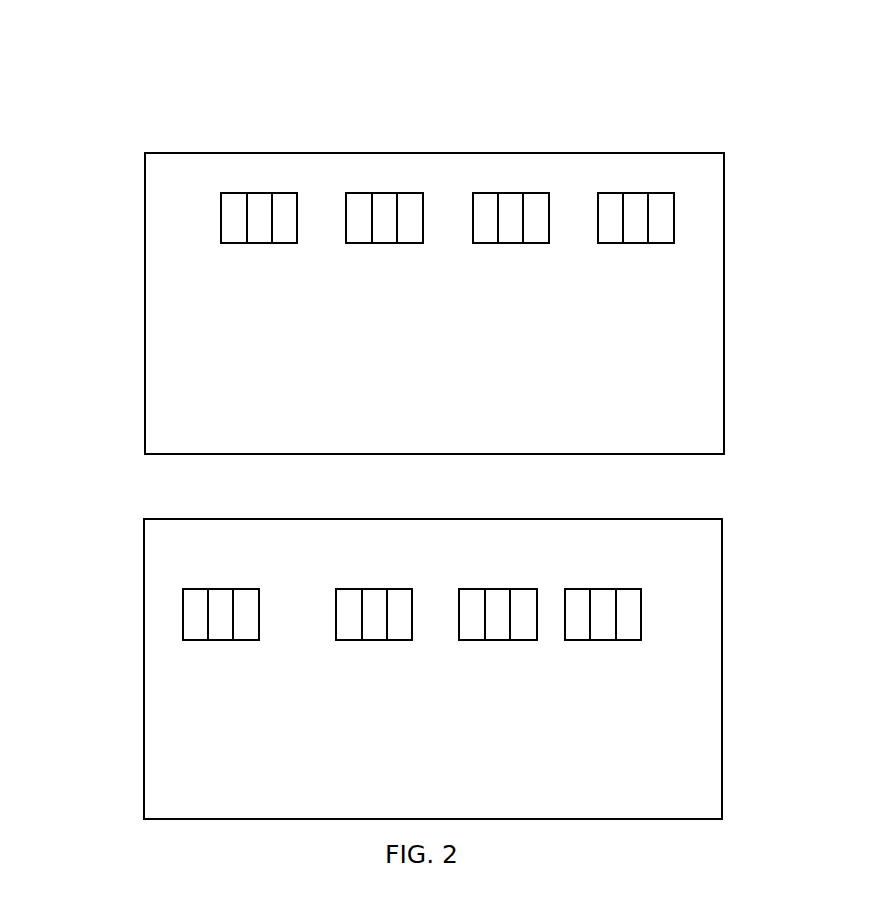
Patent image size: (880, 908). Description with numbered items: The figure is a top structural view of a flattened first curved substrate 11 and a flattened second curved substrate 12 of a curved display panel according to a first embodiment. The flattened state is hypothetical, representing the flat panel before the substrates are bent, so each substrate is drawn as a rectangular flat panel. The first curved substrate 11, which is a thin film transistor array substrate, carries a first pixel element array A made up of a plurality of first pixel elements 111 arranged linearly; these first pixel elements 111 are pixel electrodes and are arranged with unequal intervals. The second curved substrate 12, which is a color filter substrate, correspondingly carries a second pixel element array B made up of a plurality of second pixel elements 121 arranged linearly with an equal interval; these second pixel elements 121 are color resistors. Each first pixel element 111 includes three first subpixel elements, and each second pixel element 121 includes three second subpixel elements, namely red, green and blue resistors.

The first curved substrate 11 is at (172, 551).
The first pixel element 111 is at (641, 589).
The second curved substrate 12 is at (227, 158).
The second pixel element 121 is at (272, 193).
The first pixel element array A is at (170, 610).
The second pixel element array B is at (211, 218).